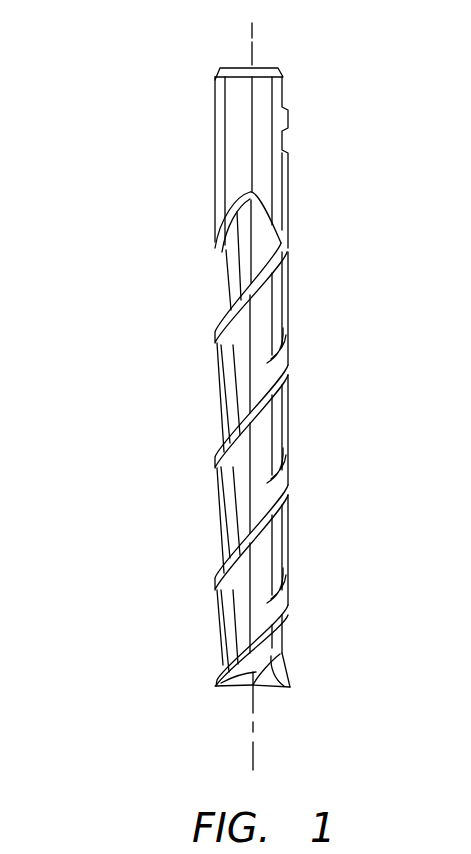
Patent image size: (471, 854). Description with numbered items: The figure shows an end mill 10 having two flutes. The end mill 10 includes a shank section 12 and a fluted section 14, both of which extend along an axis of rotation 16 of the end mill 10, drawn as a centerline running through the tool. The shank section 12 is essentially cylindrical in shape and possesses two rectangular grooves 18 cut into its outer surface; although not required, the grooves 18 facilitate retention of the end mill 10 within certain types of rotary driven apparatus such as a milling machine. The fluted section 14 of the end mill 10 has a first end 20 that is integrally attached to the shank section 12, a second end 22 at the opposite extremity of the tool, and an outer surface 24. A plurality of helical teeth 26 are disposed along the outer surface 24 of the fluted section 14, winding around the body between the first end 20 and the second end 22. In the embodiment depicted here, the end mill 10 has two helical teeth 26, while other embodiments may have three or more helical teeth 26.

The end mill 10 is at (183, 109).
The shank section 12 is at (213, 186).
The fluted section 14 is at (215, 413).
The axis of rotation 16 is at (251, 724).
The rectangular grooves 18 is at (283, 97).
The first end 20 is at (283, 72).
The second end 22 is at (284, 689).
The outer surface 24 is at (290, 231).
The helical teeth 26 is at (225, 322).